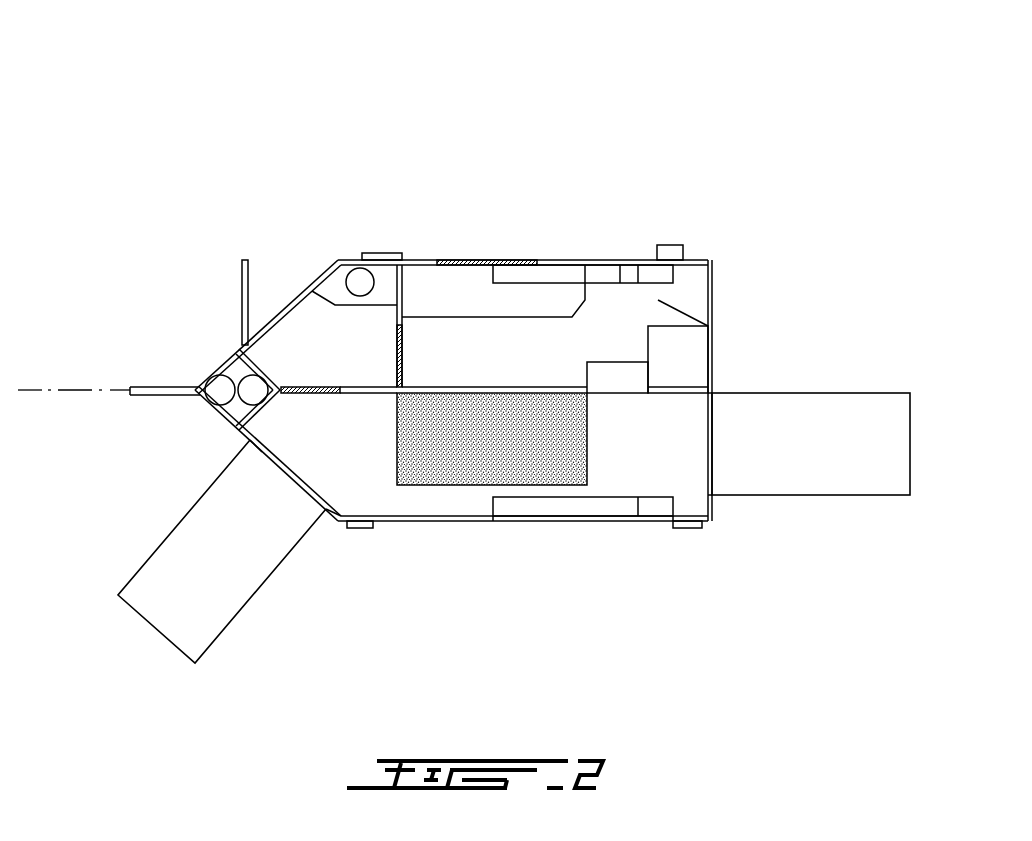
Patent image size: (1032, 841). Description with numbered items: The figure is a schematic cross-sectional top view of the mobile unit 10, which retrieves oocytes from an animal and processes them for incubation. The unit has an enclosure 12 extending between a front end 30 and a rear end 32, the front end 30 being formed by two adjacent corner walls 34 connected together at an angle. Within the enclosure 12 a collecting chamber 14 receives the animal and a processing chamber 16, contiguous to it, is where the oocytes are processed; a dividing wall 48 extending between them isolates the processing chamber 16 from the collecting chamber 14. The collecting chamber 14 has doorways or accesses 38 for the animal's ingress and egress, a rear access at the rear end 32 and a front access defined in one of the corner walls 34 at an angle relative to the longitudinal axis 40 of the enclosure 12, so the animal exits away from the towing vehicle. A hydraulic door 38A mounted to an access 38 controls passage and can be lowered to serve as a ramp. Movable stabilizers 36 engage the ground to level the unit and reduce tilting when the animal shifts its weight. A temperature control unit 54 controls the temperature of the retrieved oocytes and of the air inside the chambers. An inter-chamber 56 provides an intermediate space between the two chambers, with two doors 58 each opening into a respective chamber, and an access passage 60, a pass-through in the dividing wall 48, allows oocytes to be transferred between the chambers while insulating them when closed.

The mobile unit 10 is at (262, 143).
The enclosure 12 is at (698, 258).
The collecting chamber 14 is at (315, 460).
The processing chamber 16 is at (530, 360).
The front end 30 is at (192, 385).
The rear end 32 is at (712, 367).
The corner walls 34 is at (230, 363).
The movable stabilizers 36 is at (358, 530).
The doorways or accesses 38 is at (262, 465).
The hydraulic door 38A is at (130, 582).
The longitudinal axis 40 is at (68, 388).
The dividing wall 48 is at (462, 390).
The temperature control unit 54 is at (633, 276).
The inter-chamber 56 is at (322, 358).
The doors 58 is at (307, 387).
The access passage 60 is at (620, 377).